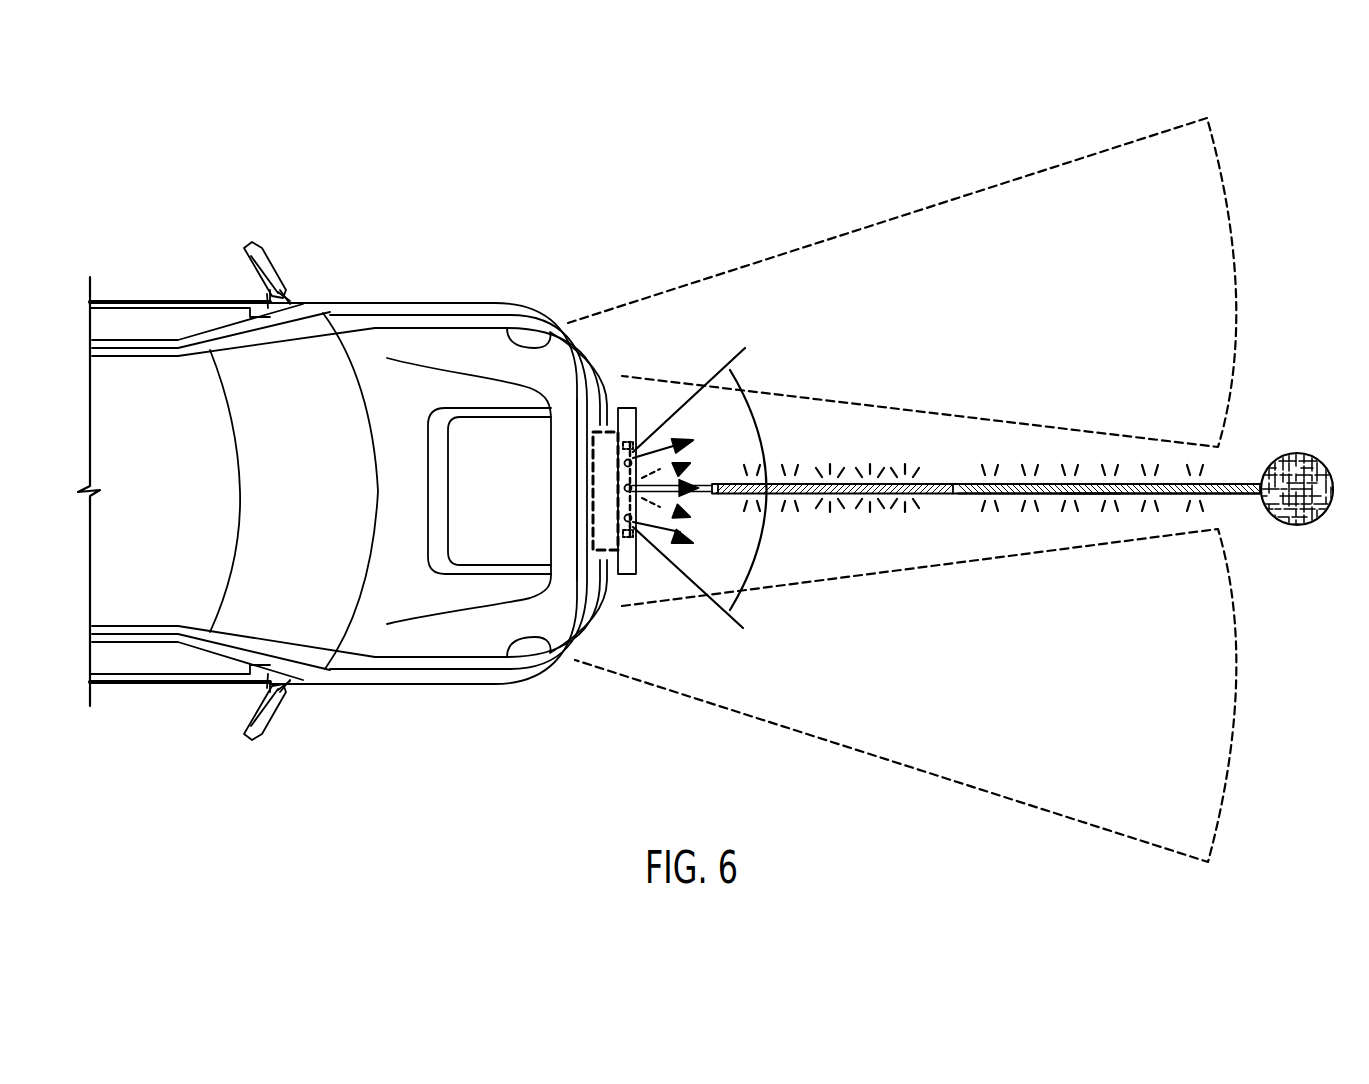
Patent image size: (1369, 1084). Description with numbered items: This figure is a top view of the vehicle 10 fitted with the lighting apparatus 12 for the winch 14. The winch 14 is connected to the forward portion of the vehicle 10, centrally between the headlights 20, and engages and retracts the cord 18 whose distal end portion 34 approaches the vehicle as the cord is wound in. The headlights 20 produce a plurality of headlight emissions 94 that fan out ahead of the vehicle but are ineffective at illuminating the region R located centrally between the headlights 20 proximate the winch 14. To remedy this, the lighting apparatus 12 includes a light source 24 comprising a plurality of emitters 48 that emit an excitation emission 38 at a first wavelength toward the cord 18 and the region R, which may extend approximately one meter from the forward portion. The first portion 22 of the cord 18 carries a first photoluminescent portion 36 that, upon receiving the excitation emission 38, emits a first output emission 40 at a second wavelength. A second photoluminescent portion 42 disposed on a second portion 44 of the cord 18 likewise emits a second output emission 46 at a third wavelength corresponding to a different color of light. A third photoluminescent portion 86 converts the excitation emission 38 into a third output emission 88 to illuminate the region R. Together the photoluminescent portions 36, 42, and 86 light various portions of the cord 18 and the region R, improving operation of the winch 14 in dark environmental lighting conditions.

The vehicle 10 is at (309, 497).
The lighting apparatus 12 is at (566, 522).
The winch 14 is at (619, 556).
The cord 18 is at (970, 466).
The headlights 20 is at (540, 348).
The first portion 22 is at (1033, 498).
The light source 24 is at (606, 531).
The distal end portion 34 is at (1257, 460).
The first photoluminescent portion 36 is at (1109, 542).
The excitation emission 38 is at (661, 478).
The first output emission 40 is at (1085, 470).
The second photoluminescent portion 42 is at (823, 492).
The second portion 44 is at (1017, 513).
The second output emission 46 is at (845, 467).
The emitters 48 is at (625, 518).
The third photoluminescent portion 86 is at (632, 375).
The third output emission 88 is at (640, 452).
The headlight emissions 94 is at (1199, 269).
The region R is at (900, 462).